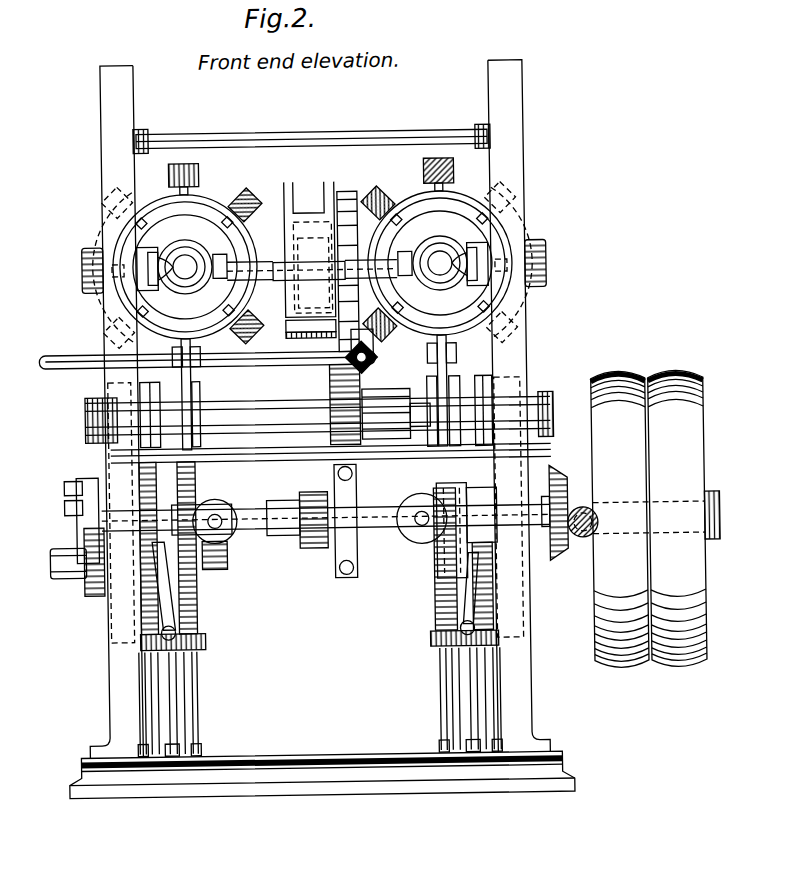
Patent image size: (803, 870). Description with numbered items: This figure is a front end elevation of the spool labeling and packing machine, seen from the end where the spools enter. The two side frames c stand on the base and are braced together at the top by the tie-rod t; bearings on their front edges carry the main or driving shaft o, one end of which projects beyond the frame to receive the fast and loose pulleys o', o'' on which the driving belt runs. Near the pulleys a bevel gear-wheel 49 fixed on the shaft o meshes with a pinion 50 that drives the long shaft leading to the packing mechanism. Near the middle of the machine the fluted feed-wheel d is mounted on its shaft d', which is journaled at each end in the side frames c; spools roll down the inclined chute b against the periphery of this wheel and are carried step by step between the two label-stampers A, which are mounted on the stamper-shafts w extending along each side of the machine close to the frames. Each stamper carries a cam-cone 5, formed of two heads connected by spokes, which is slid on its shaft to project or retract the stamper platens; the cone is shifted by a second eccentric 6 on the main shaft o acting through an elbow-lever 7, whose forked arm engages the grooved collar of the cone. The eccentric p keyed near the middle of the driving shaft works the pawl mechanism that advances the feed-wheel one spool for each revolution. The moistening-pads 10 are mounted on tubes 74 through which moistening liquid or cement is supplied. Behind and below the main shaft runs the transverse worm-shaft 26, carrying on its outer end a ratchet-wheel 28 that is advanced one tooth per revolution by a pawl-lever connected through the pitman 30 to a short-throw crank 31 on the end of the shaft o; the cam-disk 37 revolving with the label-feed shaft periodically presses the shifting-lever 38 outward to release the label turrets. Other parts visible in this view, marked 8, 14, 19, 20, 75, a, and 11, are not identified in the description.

The tie-rod t is at (312, 132).
The side frame c is at (316, 408).
The cam-cone 5 is at (312, 248).
The stamper-shaft w is at (192, 262).
The label-stamper A is at (320, 261).
The clamp block 14 is at (386, 335).
The inclined chute b is at (312, 270).
The moistening-pad 10 is at (309, 331).
The tube 74 is at (189, 360).
The coupling 20 is at (366, 357).
The elbow-lever 7 is at (192, 370).
The guide bar 8 is at (316, 412).
The feed-wheel shaft d' is at (319, 412).
The feed-wheel d is at (333, 404).
The lower shaft 75 is at (331, 462).
The main driving shaft o is at (325, 515).
The cam-disk 37 is at (225, 498).
The eccentric p is at (346, 520).
The disk a is at (421, 518).
The worm-shaft 26 is at (264, 538).
The second eccentric 6 is at (430, 585).
The crank 31 is at (63, 497).
The pitman 30 is at (75, 538).
The ratchet-wheel 28 is at (94, 573).
The rack 19 is at (205, 608).
The shifting-lever 38 is at (166, 591).
The column 11 is at (320, 702).
The bevel gear-wheel 49 is at (555, 525).
The pinion 50 is at (583, 534).
The fast pulley o' is at (649, 519).
The loose pulley o'' is at (685, 518).